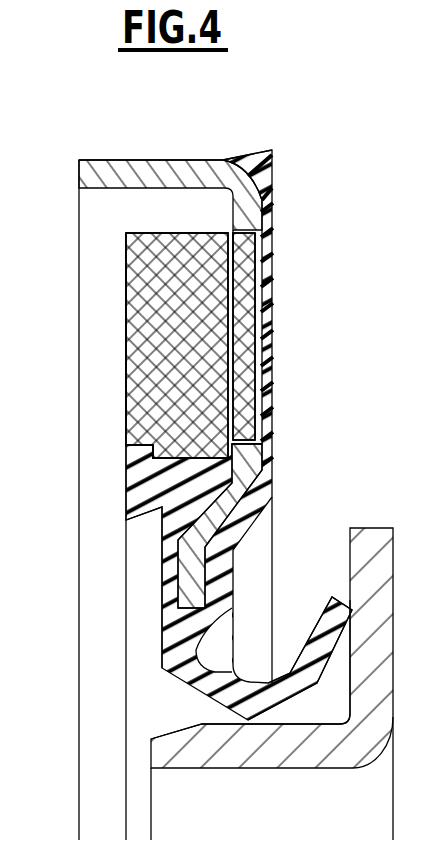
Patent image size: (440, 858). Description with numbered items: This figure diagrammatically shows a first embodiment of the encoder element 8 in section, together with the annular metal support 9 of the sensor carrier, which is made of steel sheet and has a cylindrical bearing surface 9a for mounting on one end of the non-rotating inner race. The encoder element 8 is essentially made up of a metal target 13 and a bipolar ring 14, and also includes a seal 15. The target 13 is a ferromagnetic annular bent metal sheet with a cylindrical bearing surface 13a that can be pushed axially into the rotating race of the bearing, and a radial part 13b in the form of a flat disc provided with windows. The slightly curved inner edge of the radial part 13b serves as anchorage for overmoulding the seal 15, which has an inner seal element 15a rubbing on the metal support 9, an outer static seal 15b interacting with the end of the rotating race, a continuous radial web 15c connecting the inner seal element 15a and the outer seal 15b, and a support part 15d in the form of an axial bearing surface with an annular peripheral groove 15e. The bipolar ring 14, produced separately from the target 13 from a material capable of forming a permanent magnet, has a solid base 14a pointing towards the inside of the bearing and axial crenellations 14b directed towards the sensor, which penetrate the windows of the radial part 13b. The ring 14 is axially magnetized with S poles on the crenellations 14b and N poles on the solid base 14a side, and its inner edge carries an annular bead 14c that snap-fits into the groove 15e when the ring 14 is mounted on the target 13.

The encoder element 8 is at (284, 367).
The annular metal support 9 is at (331, 771).
The cylindrical bearing surface 9a is at (256, 755).
The metal target 13 is at (98, 152).
The cylindrical bearing surface 13a is at (147, 170).
The radial part 13b is at (243, 473).
The bipolar ring 14 is at (178, 226).
The solid base 14a is at (133, 283).
The axial crenellations 14b is at (243, 272).
The annular bead 14c is at (147, 454).
The seal 15 is at (188, 706).
The inner seal element 15a is at (279, 712).
The outer static seal 15b is at (257, 163).
The continuous radial web 15c is at (268, 298).
The support part 15d is at (146, 484).
The annular peripheral groove 15e is at (163, 506).